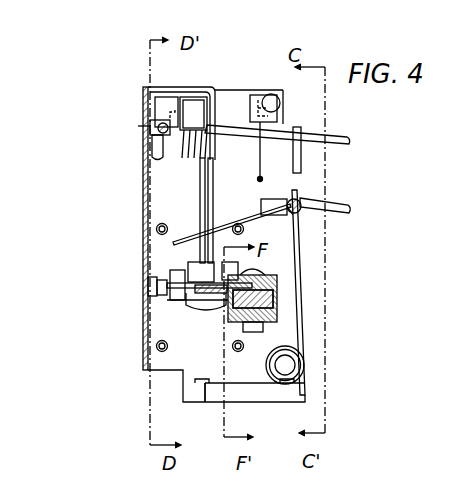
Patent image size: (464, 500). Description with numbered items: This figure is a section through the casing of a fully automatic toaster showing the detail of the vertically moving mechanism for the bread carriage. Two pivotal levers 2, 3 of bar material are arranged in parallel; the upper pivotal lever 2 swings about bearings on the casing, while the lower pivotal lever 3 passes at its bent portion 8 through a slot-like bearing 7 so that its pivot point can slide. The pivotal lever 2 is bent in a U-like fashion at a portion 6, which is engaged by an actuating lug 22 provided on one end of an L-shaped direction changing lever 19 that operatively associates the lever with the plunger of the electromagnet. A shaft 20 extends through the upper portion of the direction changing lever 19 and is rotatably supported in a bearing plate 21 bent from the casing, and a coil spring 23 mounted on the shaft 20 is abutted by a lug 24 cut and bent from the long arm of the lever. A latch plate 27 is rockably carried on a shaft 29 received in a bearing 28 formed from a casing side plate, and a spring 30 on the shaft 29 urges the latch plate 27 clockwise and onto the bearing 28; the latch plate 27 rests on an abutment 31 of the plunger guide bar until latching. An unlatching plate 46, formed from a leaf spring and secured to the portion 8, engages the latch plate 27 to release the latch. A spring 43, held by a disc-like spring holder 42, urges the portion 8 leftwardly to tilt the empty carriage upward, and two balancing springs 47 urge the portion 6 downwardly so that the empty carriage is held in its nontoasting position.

The pivotal lever 2 is at (330, 146).
The pivotal lever 3 is at (332, 206).
The portion of pivotal lever 6 is at (150, 132).
The slot-like bearing 7 is at (263, 209).
The bent portion of pivotal lever 8 is at (286, 198).
The L-shaped direction changing lever 19 is at (188, 96).
The shaft 20 is at (139, 138).
The bearing plate 21 is at (206, 91).
The actuating lug 22 is at (164, 100).
The coil spring 23 is at (200, 164).
The lug 24 is at (192, 262).
The latch plate 27 is at (170, 303).
The bearing 28 is at (177, 315).
The shaft 29 is at (148, 281).
The spring 30 is at (154, 292).
The abutment 31 is at (193, 312).
The spring holder 42 is at (304, 368).
The spring 43 is at (303, 324).
The unlatching plate 46 is at (254, 222).
The balancing spring 47 is at (275, 95).